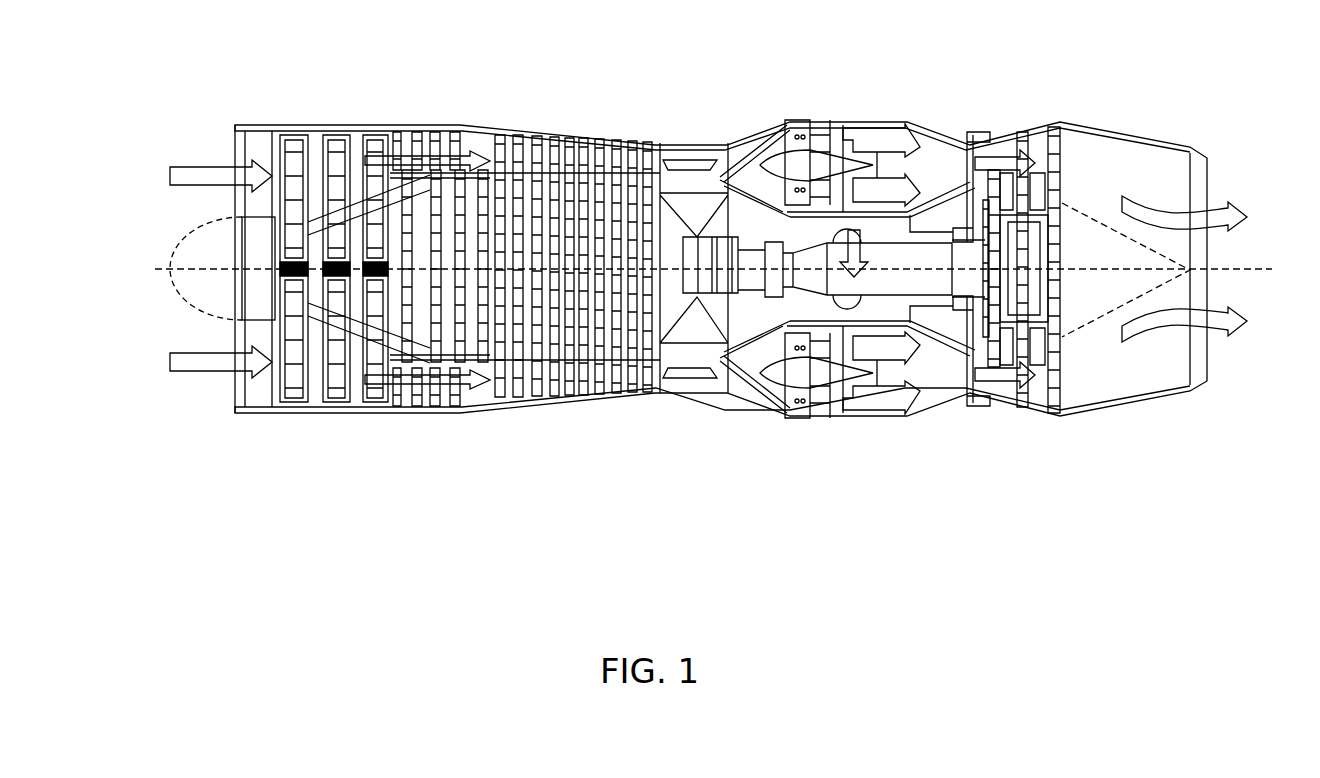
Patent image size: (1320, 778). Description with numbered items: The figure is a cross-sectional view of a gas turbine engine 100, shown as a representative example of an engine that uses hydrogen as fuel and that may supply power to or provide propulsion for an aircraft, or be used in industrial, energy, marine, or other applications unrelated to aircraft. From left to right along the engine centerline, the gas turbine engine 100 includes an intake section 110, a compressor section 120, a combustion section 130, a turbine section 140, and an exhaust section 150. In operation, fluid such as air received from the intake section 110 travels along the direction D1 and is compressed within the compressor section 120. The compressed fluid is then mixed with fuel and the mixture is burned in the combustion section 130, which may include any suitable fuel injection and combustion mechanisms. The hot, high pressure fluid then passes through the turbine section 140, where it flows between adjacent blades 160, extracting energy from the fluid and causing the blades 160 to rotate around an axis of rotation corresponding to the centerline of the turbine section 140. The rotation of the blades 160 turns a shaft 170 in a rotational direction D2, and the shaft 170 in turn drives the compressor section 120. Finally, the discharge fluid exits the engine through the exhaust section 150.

The gas turbine engine 100 is at (762, 478).
The intake section 110 is at (222, 397).
The compressor section 120 is at (512, 140).
The combustion section 130 is at (932, 145).
The turbine section 140 is at (1039, 126).
The exhaust section 150 is at (1206, 189).
The blades 160 is at (1062, 240).
The shaft 170 is at (897, 270).
The direction D1 is at (185, 177).
The rotational direction D2 is at (847, 240).